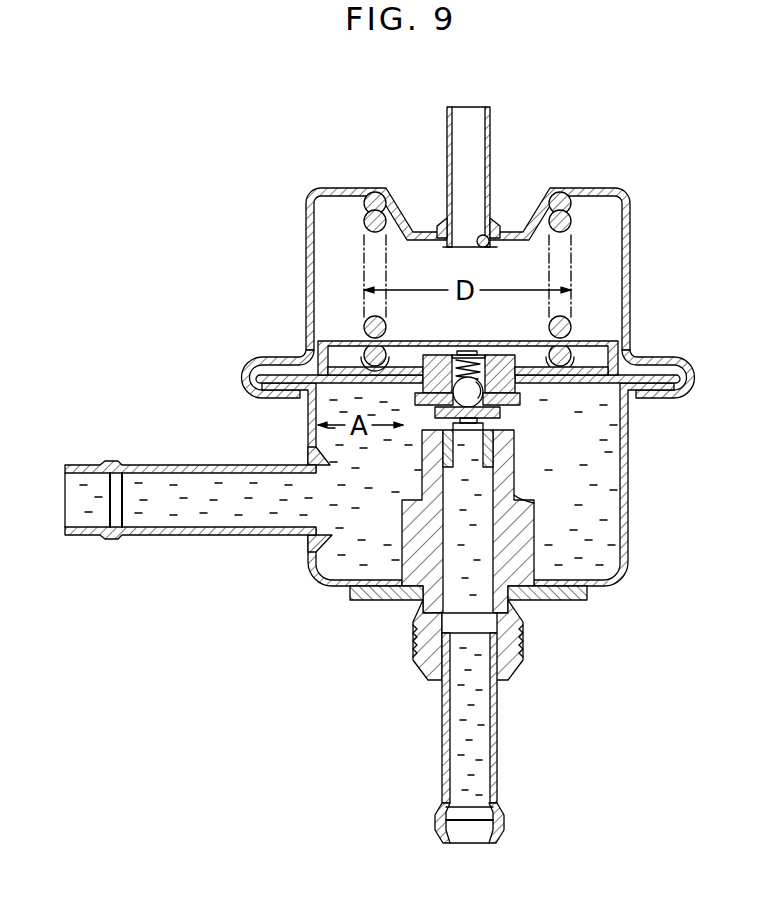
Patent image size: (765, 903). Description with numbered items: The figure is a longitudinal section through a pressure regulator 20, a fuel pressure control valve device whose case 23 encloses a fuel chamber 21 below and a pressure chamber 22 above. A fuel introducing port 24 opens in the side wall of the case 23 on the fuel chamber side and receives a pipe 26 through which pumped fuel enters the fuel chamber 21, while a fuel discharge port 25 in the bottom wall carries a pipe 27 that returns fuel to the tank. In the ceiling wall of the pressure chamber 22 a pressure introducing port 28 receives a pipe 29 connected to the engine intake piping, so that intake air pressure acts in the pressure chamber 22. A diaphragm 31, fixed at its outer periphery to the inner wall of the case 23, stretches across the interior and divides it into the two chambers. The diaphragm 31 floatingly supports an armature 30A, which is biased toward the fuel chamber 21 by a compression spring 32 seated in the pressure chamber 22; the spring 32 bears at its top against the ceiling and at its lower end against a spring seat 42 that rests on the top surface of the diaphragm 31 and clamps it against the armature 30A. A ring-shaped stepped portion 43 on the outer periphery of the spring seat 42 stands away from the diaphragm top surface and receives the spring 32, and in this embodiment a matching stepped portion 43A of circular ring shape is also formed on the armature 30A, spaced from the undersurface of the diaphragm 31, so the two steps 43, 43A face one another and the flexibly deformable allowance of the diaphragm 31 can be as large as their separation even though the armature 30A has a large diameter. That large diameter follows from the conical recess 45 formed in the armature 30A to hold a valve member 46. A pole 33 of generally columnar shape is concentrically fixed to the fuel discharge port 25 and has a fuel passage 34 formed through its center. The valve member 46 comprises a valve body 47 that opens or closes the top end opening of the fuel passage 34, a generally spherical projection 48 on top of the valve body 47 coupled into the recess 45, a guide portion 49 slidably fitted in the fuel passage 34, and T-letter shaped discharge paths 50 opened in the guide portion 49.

The pressure regulator 20 is at (386, 123).
The fuel chamber 21 is at (626, 456).
The pressure chamber 22 is at (610, 213).
The case 23 is at (630, 502).
The fuel introducing port 24 is at (300, 535).
The fuel discharge port 25 is at (405, 604).
The pipe 26 is at (185, 465).
The pipe 27 is at (497, 736).
The pressure introducing port 28 is at (485, 246).
The pipe 29 is at (447, 147).
The armature 30A is at (428, 372).
The diaphragm 31 is at (301, 397).
The compression spring 32 is at (563, 195).
The pole 33 is at (413, 500).
The fuel passage 34 is at (508, 512).
The spring seat 42 is at (533, 370).
The stepped portion 43 is at (353, 376).
The stepped portion 43A is at (565, 384).
The conical recess 45 is at (464, 358).
The valve member 46 is at (507, 409).
The valve body 47 is at (410, 432).
The projection 48 is at (478, 388).
The guide portion 49 is at (512, 470).
The discharge paths 50 is at (497, 421).